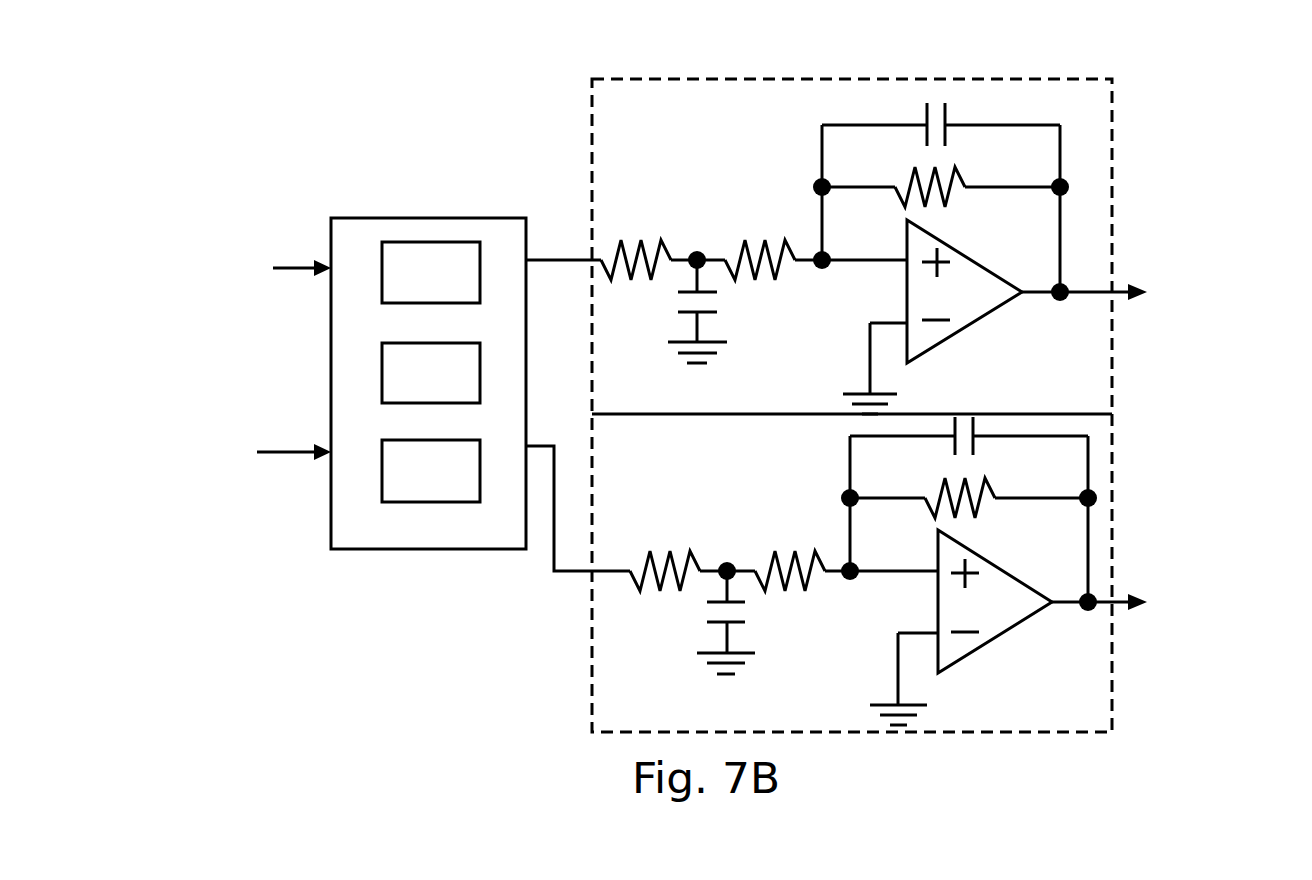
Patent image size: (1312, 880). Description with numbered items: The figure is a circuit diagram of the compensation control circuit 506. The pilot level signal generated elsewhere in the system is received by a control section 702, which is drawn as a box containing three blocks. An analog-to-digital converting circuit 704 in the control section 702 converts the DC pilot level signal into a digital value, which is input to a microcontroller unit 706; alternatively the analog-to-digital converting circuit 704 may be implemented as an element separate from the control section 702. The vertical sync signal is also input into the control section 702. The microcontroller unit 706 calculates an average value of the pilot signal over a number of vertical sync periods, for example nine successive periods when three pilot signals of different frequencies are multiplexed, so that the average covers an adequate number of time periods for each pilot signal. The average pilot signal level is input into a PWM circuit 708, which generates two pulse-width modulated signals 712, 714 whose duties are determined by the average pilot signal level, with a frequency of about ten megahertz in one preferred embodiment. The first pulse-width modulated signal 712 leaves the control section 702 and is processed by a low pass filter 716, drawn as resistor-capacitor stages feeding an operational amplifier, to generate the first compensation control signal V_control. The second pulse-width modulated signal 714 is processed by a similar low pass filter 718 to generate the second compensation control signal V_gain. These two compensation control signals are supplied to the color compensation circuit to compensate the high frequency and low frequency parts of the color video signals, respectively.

The compensation control circuit 506 is at (285, 105).
The control section 702 is at (480, 538).
The analog-to-digital converting circuit 704 is at (417, 252).
The microcontroller unit 706 is at (480, 352).
The PWM circuit 708 is at (406, 490).
The first pulse-width modulated signal 712 is at (552, 257).
The second pulse-width modulated signal 714 is at (578, 572).
The low pass filter 716 is at (1115, 162).
The low pass filter 718 is at (1115, 515).